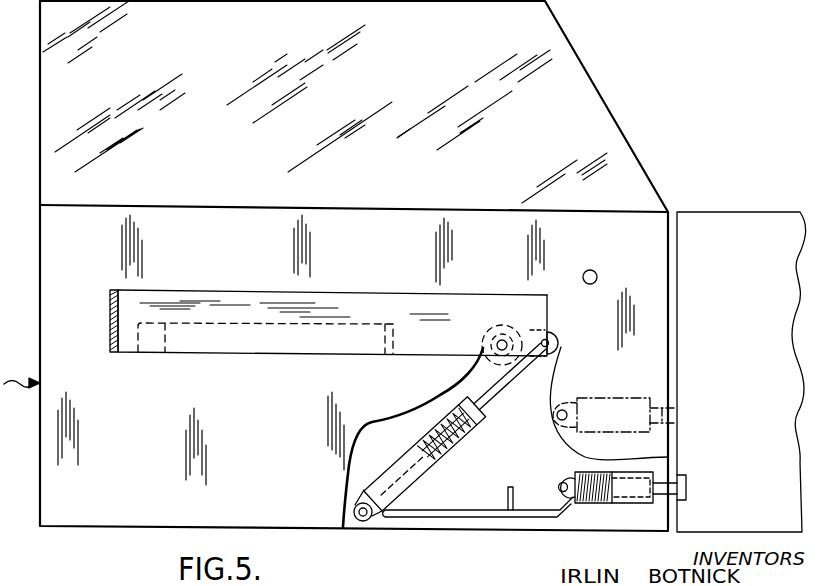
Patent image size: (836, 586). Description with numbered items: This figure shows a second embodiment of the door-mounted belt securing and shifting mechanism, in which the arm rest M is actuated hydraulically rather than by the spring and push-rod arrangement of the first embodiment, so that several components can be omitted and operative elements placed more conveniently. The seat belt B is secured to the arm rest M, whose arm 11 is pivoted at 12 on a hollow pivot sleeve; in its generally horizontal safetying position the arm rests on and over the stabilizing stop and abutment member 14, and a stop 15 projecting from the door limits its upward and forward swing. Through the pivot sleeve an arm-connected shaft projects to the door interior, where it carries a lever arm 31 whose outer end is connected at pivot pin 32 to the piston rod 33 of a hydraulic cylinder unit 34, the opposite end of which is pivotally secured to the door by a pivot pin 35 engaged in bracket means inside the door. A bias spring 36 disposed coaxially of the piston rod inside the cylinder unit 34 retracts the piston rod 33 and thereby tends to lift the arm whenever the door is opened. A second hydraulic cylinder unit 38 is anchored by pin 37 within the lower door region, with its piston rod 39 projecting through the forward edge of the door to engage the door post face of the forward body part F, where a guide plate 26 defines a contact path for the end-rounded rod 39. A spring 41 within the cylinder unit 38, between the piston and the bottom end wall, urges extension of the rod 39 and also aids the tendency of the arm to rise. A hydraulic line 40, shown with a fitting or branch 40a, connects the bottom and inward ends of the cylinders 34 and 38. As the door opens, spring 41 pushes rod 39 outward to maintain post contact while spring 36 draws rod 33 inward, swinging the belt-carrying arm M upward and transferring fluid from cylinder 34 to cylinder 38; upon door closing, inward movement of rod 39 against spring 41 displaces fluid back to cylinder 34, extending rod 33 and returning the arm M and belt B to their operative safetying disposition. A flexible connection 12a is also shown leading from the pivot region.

The seat belt B is at (108, 320).
The arm rest M is at (228, 291).
The forward part of vehicle body F is at (742, 218).
The lever element 11 is at (474, 294).
The pivot stud 12 is at (484, 330).
The flexible cable 12a is at (473, 368).
The stop and abutment member 14 is at (228, 347).
The stop 15 is at (597, 277).
The guide plate 26 is at (688, 487).
The lever arm 31 is at (540, 330).
The pivot pin 32 is at (560, 344).
The piston rod 33 is at (511, 378).
The hydraulic cylinder unit 34 is at (408, 453).
The pivot pin 35 is at (363, 521).
The bias spring 36 is at (462, 433).
The pin 37 is at (562, 480).
The second hydraulic cylinder unit 38 is at (605, 471).
The piston rod 39 is at (662, 480).
The hydraulic line 40 is at (442, 518).
The bracket tab 40a is at (513, 521).
The spring 41 is at (604, 506).